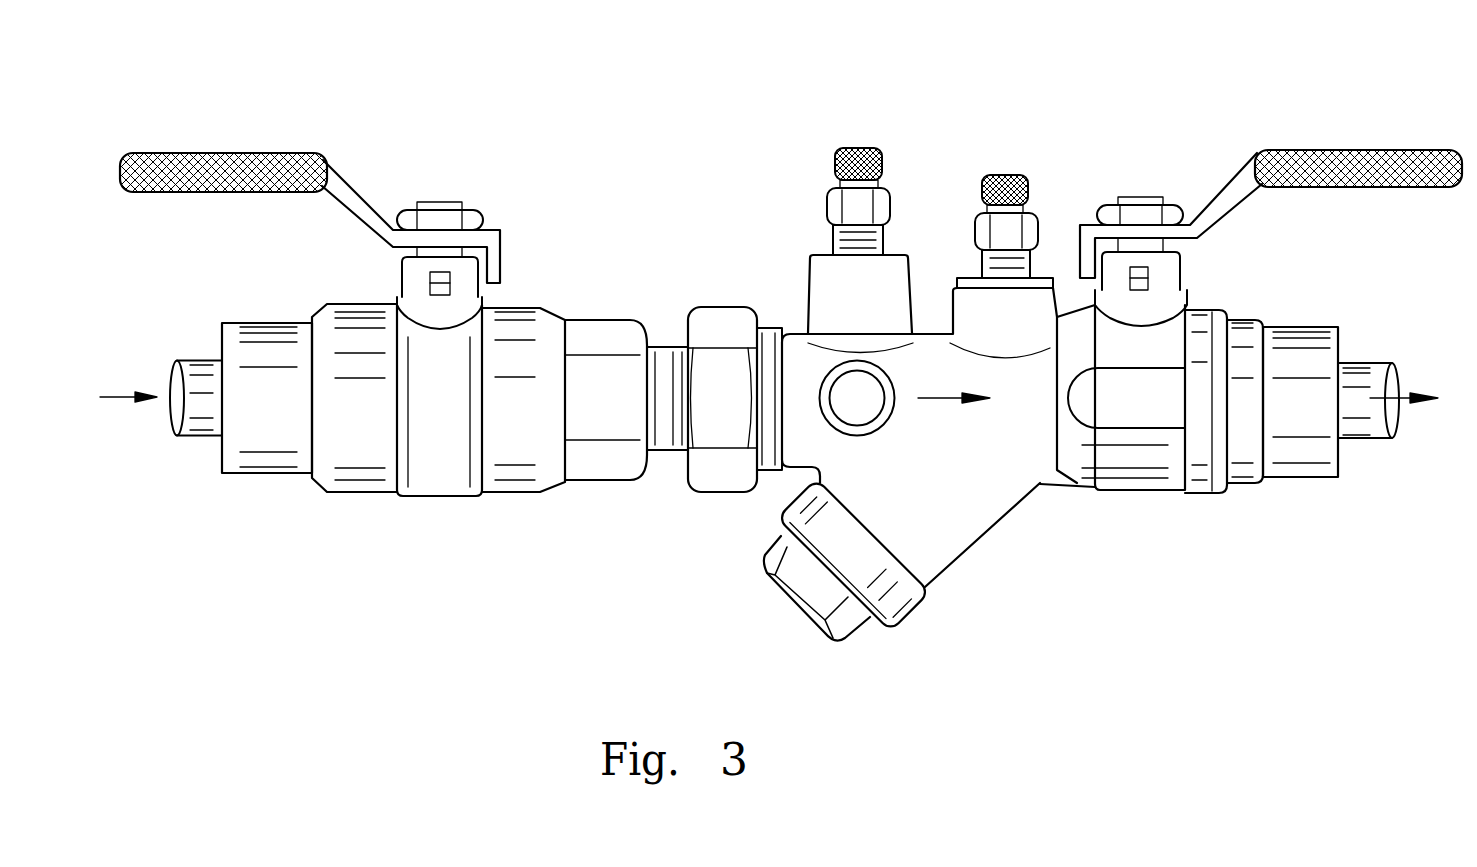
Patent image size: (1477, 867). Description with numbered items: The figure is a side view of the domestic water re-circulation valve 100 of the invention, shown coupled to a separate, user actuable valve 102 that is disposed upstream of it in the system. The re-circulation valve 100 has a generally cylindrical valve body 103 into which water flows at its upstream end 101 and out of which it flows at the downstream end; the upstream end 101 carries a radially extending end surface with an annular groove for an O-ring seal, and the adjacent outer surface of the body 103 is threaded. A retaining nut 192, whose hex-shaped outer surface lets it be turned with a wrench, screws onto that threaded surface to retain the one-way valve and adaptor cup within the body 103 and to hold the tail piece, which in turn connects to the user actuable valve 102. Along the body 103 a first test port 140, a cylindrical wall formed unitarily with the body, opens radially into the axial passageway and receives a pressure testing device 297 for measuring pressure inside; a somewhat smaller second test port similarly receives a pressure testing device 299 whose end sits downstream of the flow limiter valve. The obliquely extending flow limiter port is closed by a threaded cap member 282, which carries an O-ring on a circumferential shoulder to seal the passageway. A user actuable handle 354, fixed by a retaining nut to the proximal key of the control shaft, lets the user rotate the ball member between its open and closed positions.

The domestic water re-circulation valve 100 is at (1138, 638).
The upstream end of the valve body 101 is at (1055, 545).
The user actuable valve 102 is at (343, 593).
The valve body 103 is at (427, 497).
The first test port 140 is at (808, 280).
The retaining nut 192 is at (698, 497).
The cap member 282 is at (852, 642).
The pressure testing device 297 is at (842, 127).
The pressure testing device 299 is at (998, 163).
The user actuable handle 354 is at (1308, 138).